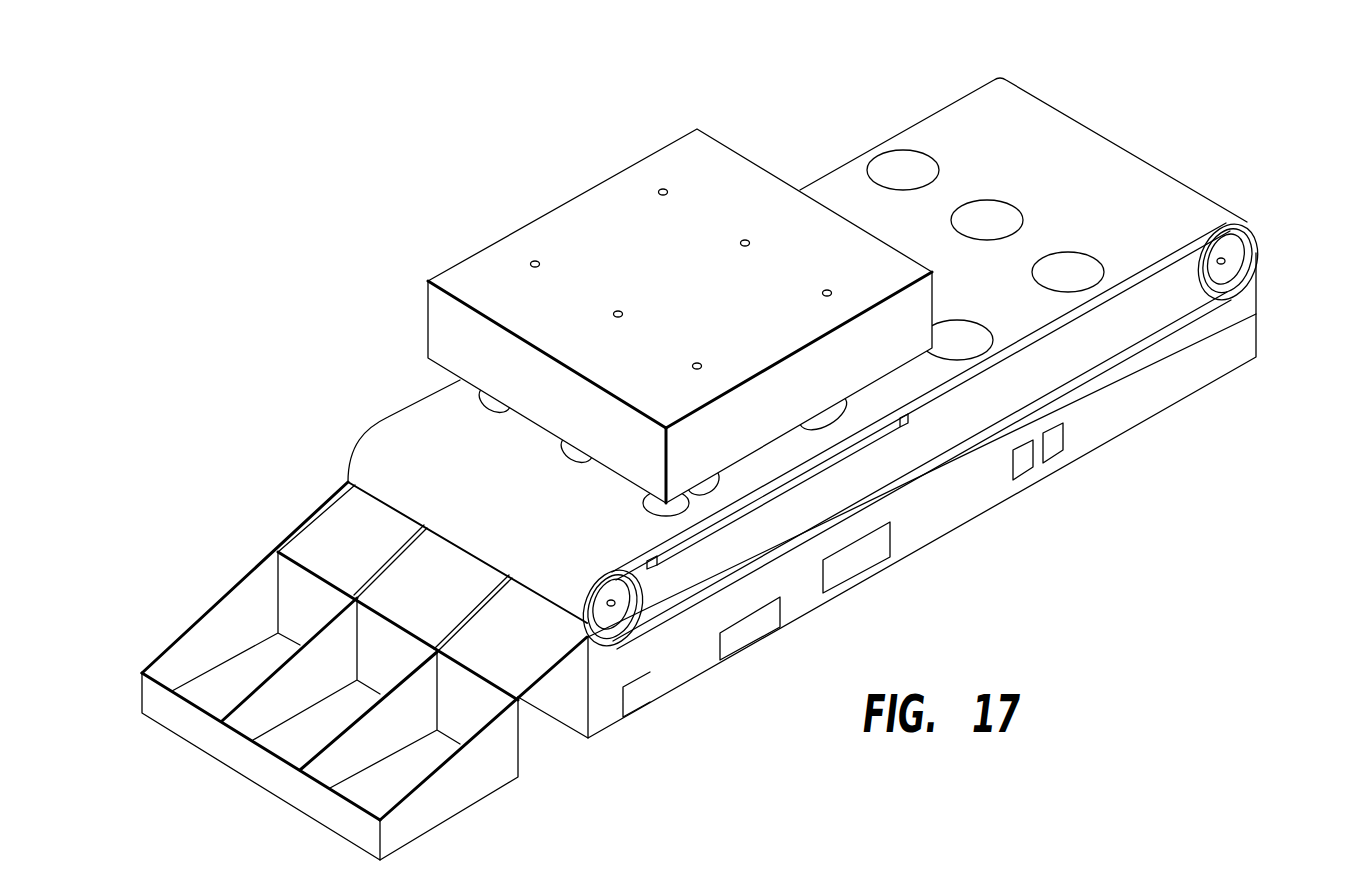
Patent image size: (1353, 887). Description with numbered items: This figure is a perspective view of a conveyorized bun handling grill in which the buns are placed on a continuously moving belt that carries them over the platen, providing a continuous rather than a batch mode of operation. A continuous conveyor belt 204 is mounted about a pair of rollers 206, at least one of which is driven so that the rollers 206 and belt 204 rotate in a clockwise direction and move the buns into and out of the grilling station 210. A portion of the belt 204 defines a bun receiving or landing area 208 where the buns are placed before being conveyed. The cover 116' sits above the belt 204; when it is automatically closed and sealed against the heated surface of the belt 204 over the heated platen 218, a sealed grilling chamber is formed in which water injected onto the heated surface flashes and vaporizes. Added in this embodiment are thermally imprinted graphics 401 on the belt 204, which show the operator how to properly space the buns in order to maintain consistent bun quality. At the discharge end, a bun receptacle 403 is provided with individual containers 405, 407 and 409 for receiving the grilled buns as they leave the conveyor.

The grilling station 210 is at (472, 228).
The cover 116' is at (680, 317).
The conveyor belt 204 is at (827, 170).
The rollers 206 is at (1221, 262).
The bun receiving or landing area 208 is at (1082, 172).
The heated platen 218 is at (885, 443).
The thermally imprinted graphics 401 is at (936, 148).
The bun receptacle 403 is at (227, 590).
The individual container 405 is at (227, 688).
The individual container 407 is at (303, 735).
The individual container 409 is at (383, 787).